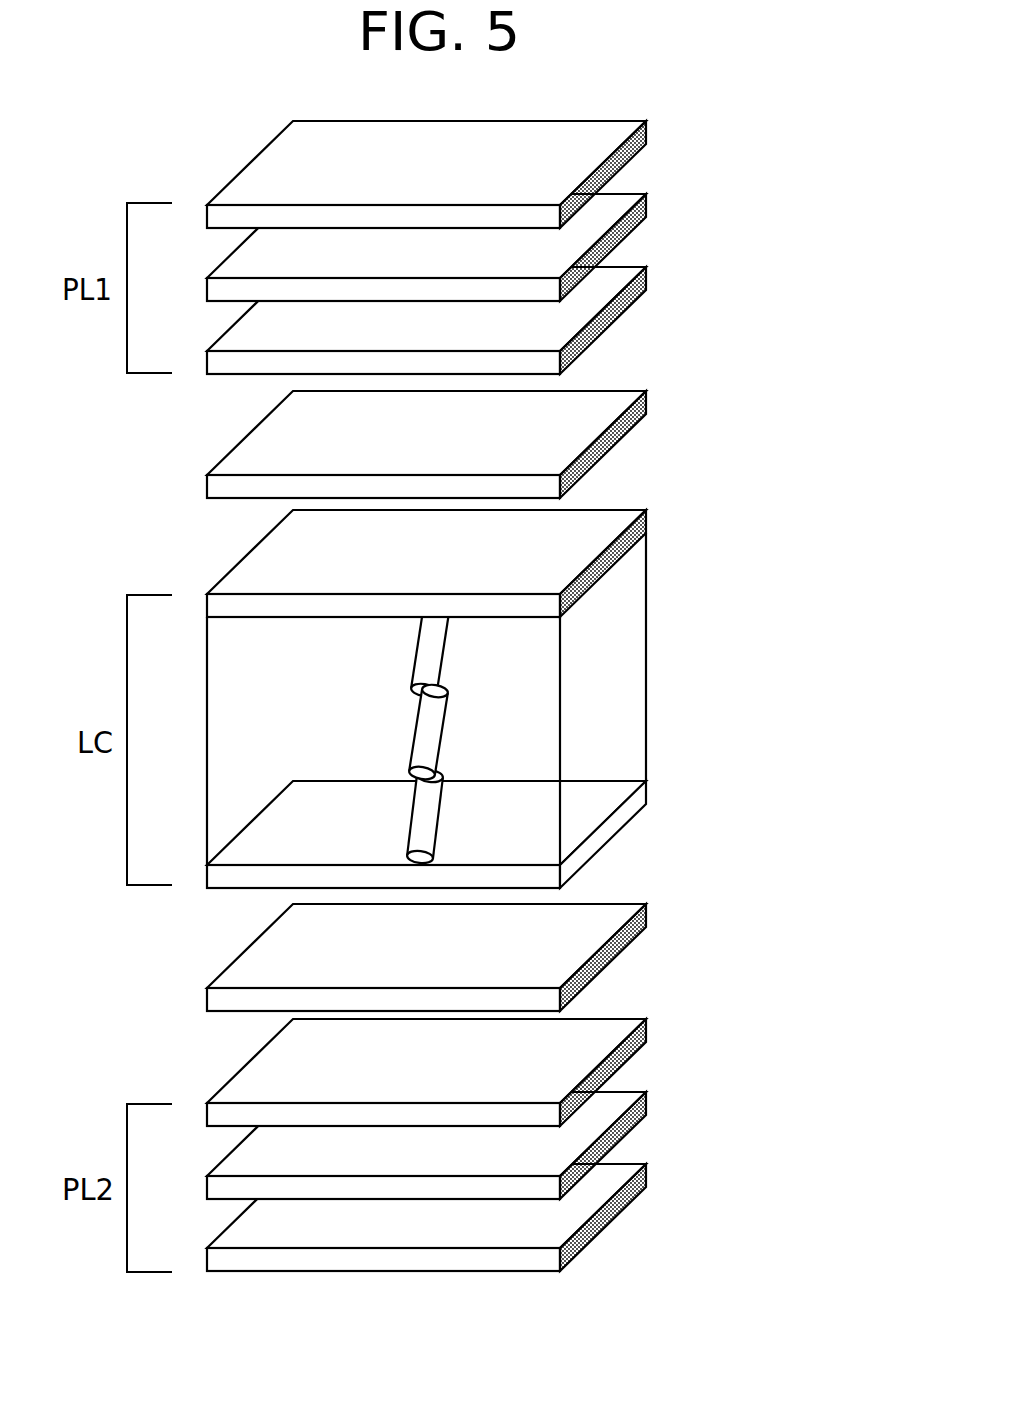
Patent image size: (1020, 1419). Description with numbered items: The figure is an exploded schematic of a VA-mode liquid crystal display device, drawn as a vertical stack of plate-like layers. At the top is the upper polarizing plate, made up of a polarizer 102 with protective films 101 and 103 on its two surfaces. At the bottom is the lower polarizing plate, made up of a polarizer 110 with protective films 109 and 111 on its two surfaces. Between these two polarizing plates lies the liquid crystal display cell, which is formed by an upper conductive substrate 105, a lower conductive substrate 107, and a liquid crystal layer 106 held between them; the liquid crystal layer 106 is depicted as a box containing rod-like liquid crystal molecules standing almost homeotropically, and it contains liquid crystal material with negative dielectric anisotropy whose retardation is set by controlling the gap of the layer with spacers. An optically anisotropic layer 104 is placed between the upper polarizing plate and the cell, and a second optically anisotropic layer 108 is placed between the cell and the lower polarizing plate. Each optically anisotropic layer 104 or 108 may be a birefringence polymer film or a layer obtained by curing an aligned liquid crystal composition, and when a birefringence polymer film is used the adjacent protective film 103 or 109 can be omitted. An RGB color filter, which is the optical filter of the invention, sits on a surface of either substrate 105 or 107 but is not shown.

The protective film 101 is at (646, 132).
The polarizer 102 is at (646, 200).
The protective film 103 is at (646, 274).
The optically anisotropic layer 104 is at (646, 390).
The substrate for liquid crystal display cell 105 is at (646, 530).
The liquid crystal layer 106 is at (527, 718).
The substrate for liquid crystal display cell 107 is at (606, 833).
The optically anisotropic layer 108 is at (646, 912).
The protective film 109 is at (646, 1035).
The polarizer 110 is at (646, 1108).
The protective film 111 is at (646, 1185).